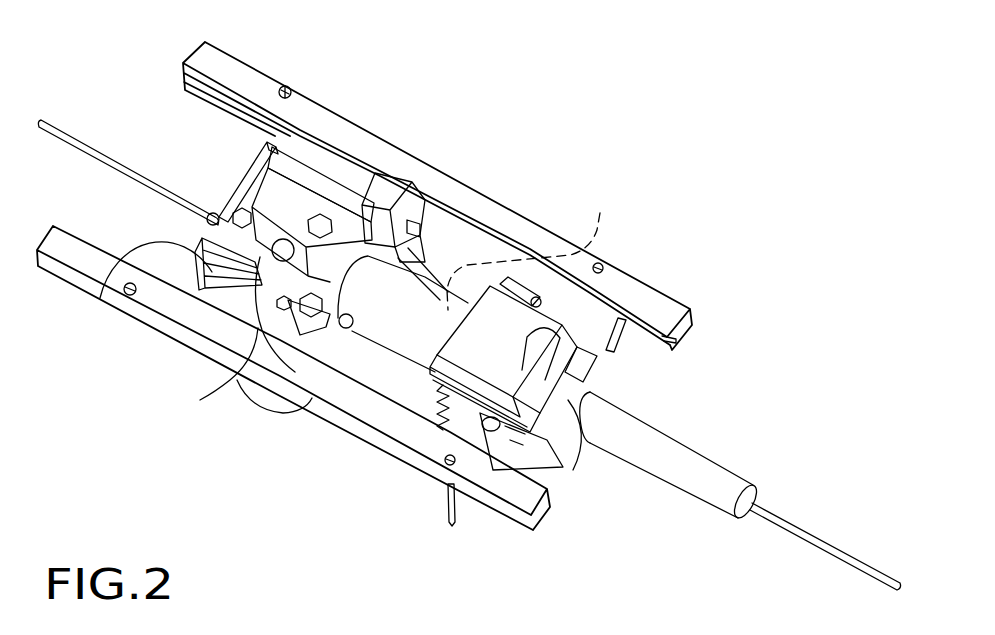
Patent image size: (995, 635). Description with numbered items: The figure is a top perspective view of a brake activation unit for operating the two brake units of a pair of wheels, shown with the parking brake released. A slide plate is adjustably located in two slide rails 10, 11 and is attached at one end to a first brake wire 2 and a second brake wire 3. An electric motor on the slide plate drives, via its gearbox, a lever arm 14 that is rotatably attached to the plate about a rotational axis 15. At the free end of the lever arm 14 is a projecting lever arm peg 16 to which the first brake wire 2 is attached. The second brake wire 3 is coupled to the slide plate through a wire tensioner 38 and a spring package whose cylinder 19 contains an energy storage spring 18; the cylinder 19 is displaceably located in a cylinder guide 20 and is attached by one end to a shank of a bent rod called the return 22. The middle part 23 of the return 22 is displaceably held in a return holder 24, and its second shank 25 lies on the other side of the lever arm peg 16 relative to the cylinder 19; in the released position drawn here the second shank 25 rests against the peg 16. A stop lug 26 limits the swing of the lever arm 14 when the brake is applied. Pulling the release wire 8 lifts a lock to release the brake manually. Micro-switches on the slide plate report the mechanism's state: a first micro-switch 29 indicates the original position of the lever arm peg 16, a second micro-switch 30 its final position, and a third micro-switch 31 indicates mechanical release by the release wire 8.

The first brake wire 2 is at (108, 157).
The second brake wire 3 is at (827, 549).
The release wire 8 is at (455, 512).
The slide rail 10 is at (408, 431).
The slide rail 11 is at (503, 212).
The lever arm 14 is at (362, 216).
The rotational axis 15 is at (177, 333).
The lever arm peg 16 is at (240, 193).
The energy storage spring 18 is at (534, 244).
The cylinder 19 is at (398, 327).
The cylinder guide 20 is at (605, 375).
The return 22 is at (315, 172).
The middle part 23 is at (388, 181).
The return holder 24 is at (398, 190).
The second shank 25 is at (230, 190).
The stop lug 26 is at (230, 357).
The first micro-switch 29 is at (123, 293).
The second micro-switch 30 is at (233, 377).
The third micro-switch 31 is at (568, 292).
The wire tensioner 38 is at (682, 455).